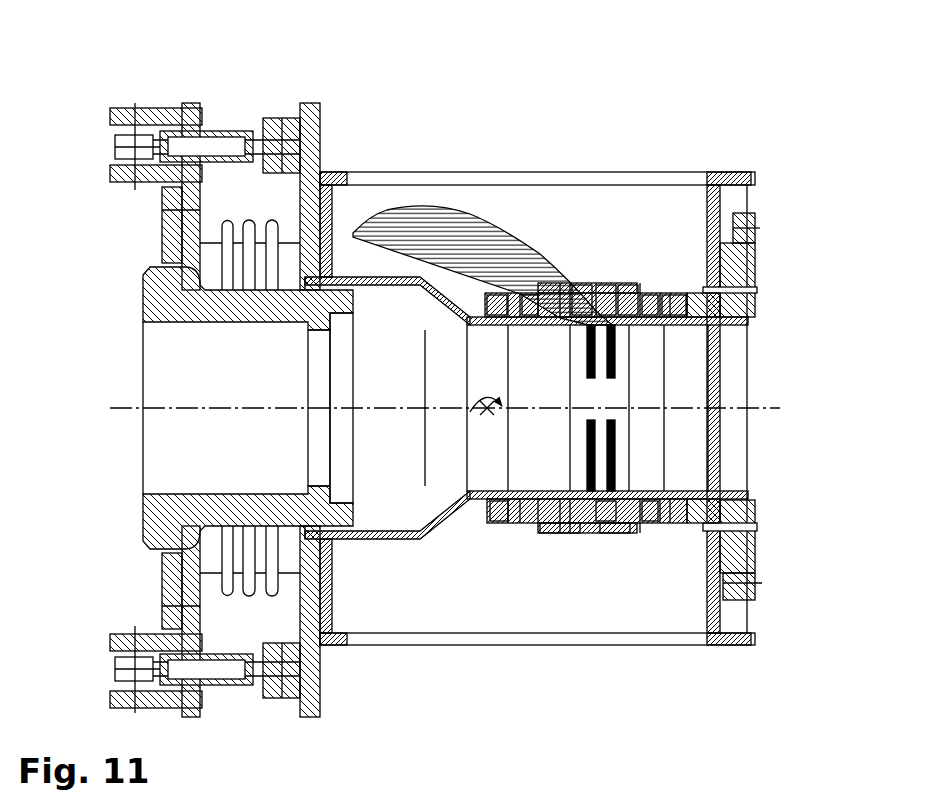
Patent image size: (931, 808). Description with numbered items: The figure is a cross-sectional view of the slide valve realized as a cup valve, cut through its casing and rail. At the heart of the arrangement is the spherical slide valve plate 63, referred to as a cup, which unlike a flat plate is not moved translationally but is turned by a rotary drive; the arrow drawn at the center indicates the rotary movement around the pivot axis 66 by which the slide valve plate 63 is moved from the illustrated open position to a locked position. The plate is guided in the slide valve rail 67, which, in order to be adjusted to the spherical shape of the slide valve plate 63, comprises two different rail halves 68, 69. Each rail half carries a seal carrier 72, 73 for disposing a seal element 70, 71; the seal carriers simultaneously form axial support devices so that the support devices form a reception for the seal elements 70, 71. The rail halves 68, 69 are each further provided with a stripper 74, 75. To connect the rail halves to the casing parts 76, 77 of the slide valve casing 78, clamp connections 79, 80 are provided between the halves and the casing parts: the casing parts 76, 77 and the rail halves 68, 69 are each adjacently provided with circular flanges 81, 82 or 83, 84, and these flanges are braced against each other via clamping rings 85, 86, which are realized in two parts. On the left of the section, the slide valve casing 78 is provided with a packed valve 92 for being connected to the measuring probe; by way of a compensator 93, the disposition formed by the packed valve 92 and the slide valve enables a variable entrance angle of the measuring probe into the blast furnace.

The slide valve plate 63 is at (395, 208).
The pivot axis 66 is at (467, 494).
The slide valve rail 67 is at (626, 268).
The rail half 68 is at (535, 265).
The rail half 69 is at (689, 286).
The seal element 70 is at (600, 258).
The seal element 71 is at (606, 250).
The seal carrier 72 is at (560, 534).
The seal carrier 73 is at (610, 524).
The stripper 74 is at (577, 327).
The stripper 75 is at (628, 327).
The casing part 76 is at (397, 541).
The casing part 77 is at (727, 323).
The slide valve casing 78 is at (756, 498).
The clamp connection 79 is at (500, 288).
The clamp connection 80 is at (706, 288).
The circular flange 81 is at (502, 409).
The circular flange 82 is at (662, 490).
The circular flange 83 is at (500, 492).
The circular flange 84 is at (600, 492).
The clamping ring 85 is at (508, 320).
The clamping ring 86 is at (752, 547).
The packed valve 92 is at (143, 548).
The compensator 93 is at (244, 212).